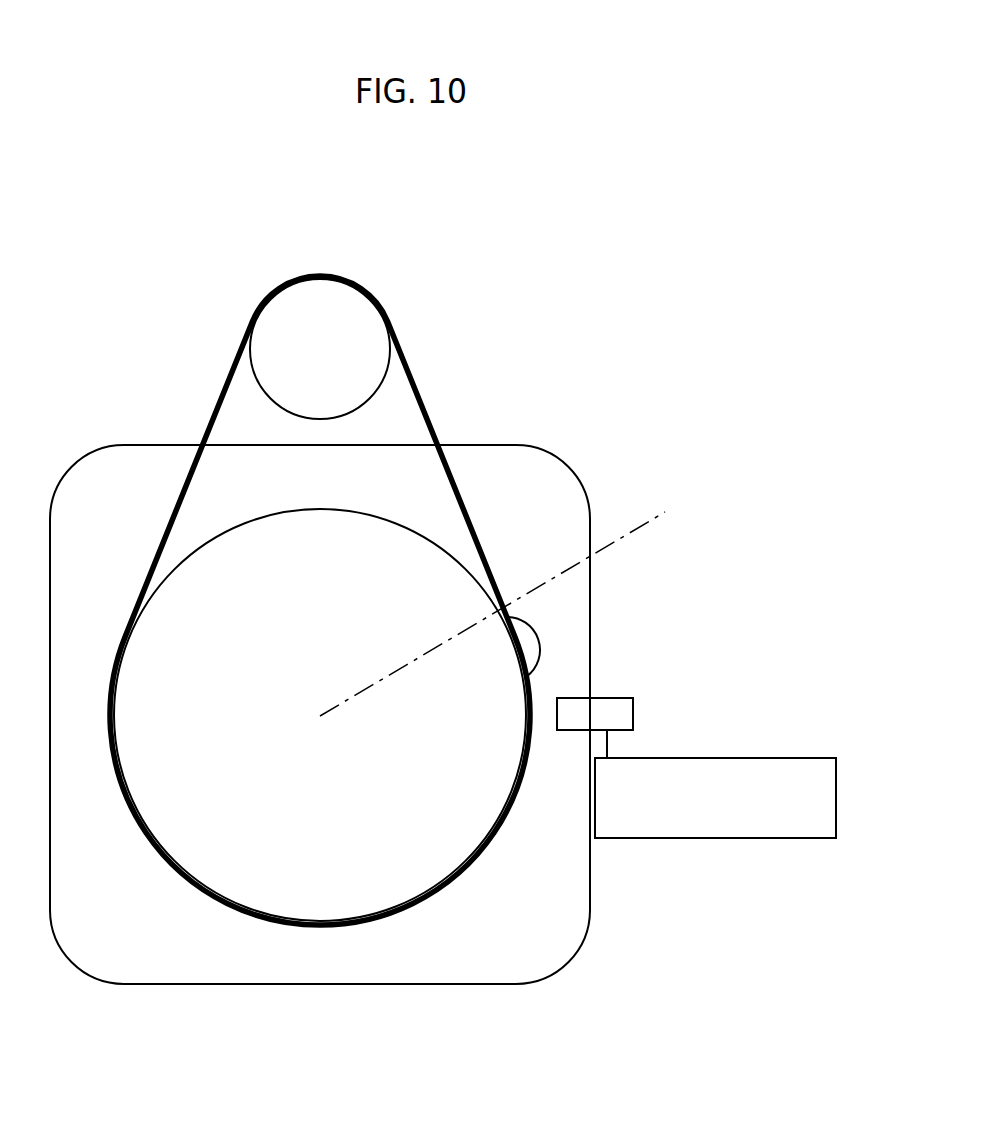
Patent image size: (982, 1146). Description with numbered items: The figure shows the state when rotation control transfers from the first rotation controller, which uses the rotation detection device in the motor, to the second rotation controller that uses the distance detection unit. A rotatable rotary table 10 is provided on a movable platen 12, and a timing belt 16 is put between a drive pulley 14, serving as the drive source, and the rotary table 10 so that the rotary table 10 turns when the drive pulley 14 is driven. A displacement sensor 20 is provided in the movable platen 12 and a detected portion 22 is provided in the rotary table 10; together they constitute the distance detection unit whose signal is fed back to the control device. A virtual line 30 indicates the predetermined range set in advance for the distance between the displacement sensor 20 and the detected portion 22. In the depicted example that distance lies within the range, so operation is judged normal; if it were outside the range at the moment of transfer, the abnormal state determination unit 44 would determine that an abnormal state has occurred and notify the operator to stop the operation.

The rotary table 10 is at (457, 815).
The movable platen 12 is at (542, 463).
The drive pulley 14 is at (365, 292).
The timing belt 16 is at (420, 400).
The displacement sensor 20 is at (633, 714).
The detected portion 22 is at (540, 650).
The virtual line 30 is at (607, 545).
The abnormal state determination unit 44 is at (762, 758).